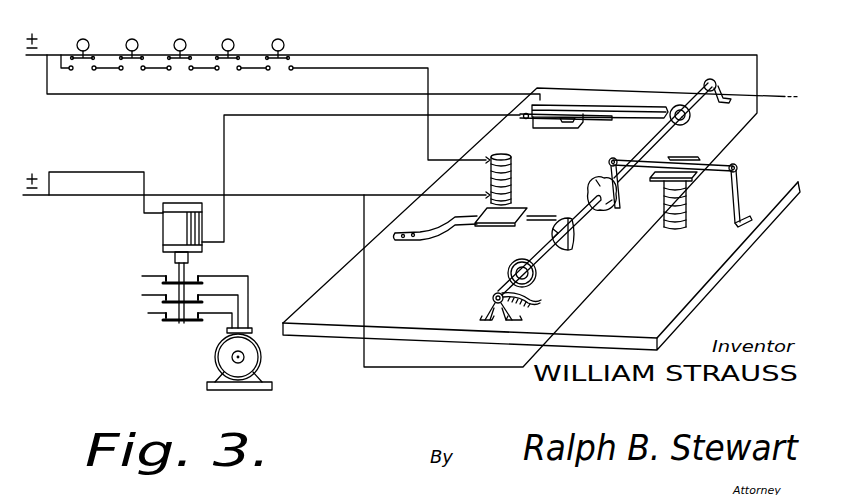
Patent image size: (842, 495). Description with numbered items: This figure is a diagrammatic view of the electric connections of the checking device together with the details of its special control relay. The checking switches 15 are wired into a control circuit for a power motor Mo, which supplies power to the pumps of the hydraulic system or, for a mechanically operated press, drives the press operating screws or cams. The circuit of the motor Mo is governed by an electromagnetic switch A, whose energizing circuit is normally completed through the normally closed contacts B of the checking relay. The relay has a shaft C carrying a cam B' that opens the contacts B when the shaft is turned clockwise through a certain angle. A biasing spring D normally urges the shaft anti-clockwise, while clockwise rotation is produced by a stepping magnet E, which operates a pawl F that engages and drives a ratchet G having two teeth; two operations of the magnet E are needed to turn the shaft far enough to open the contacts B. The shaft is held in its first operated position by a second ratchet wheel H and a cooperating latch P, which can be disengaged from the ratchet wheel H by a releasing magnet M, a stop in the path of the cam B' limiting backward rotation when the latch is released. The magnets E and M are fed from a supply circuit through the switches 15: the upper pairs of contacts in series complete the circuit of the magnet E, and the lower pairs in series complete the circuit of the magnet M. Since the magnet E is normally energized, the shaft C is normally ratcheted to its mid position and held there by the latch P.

The checking switches 15 is at (180, 39).
The electromagnetic switch A is at (163, 232).
The power motor Mo is at (216, 357).
The releasing magnet M is at (512, 160).
The latch P is at (475, 228).
The contacts B is at (600, 94).
The cam B' is at (596, 90).
The ratchet G is at (592, 187).
The pawl F is at (621, 190).
The stepping magnet E is at (688, 206).
The shaft C is at (580, 226).
The second ratchet wheel H is at (552, 262).
The biasing spring D is at (541, 291).